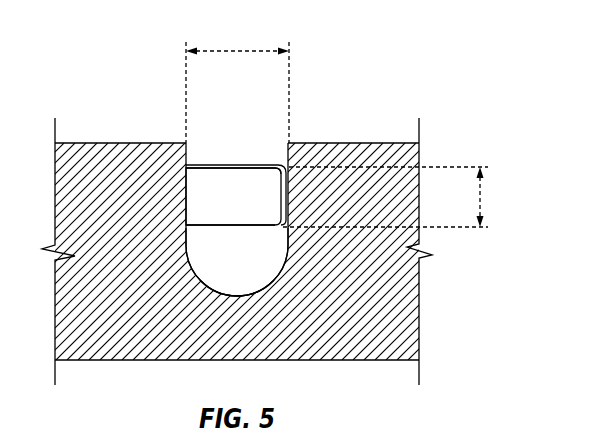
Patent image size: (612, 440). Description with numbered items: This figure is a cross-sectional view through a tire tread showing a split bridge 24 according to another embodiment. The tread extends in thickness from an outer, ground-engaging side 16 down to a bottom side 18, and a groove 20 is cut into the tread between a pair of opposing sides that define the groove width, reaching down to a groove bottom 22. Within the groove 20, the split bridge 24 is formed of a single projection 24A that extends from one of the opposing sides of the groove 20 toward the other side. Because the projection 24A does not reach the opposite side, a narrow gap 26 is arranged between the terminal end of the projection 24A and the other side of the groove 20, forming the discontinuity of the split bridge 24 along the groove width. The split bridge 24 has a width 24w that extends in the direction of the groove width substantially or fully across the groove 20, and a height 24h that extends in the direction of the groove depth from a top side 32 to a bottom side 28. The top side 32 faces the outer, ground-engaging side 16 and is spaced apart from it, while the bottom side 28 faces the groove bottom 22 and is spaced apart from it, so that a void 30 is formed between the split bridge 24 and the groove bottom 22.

The outer, ground-engaging side 16 is at (362, 143).
The bottom side 18 is at (308, 361).
The groove 20 is at (192, 148).
The groove bottom 22 is at (226, 293).
The split bridge 24 is at (243, 157).
The projection 24A is at (213, 208).
The narrow gap 26 is at (283, 167).
The bottom side 28 is at (258, 228).
The void 30 is at (243, 276).
The top side 32 is at (218, 166).
The width 24w is at (256, 50).
The height 24h is at (485, 197).